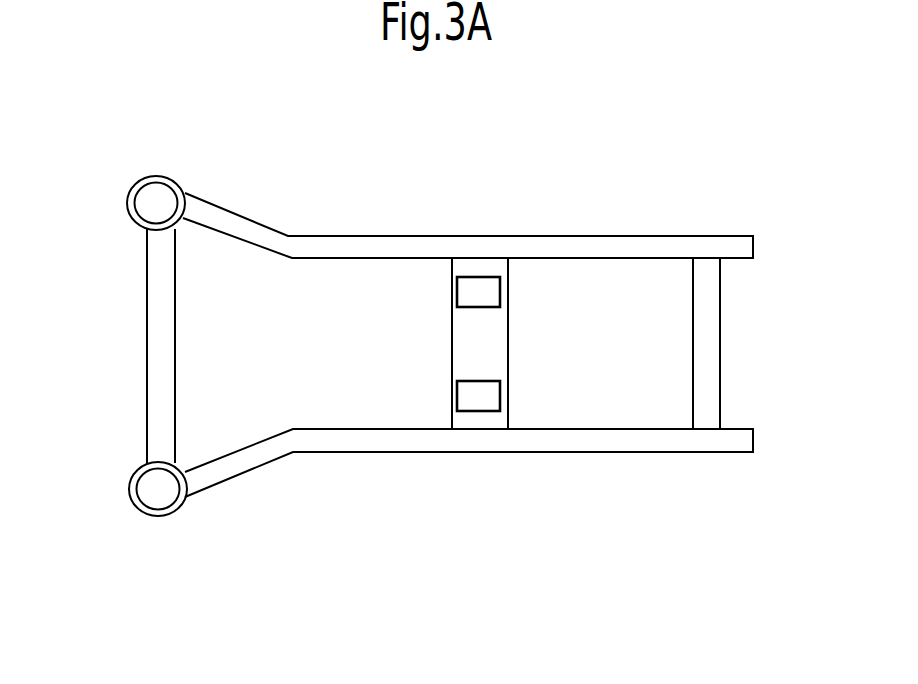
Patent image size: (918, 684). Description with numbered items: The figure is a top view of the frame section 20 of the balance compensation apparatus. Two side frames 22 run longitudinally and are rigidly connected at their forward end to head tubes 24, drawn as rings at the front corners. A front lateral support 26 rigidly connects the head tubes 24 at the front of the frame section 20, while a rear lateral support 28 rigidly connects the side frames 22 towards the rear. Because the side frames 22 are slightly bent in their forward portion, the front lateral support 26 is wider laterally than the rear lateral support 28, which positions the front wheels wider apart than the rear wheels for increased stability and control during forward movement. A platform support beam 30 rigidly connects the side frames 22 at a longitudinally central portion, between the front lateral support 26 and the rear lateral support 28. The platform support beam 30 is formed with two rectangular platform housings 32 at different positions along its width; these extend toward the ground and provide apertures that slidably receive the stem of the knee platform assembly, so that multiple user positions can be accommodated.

The frame section 20 is at (440, 193).
The side frames 22 is at (605, 236).
The head tubes 24 is at (170, 178).
The front lateral support 26 is at (147, 331).
The rear lateral support 28 is at (720, 356).
The platform support beam 30 is at (485, 345).
The platform housings 32 is at (455, 297).